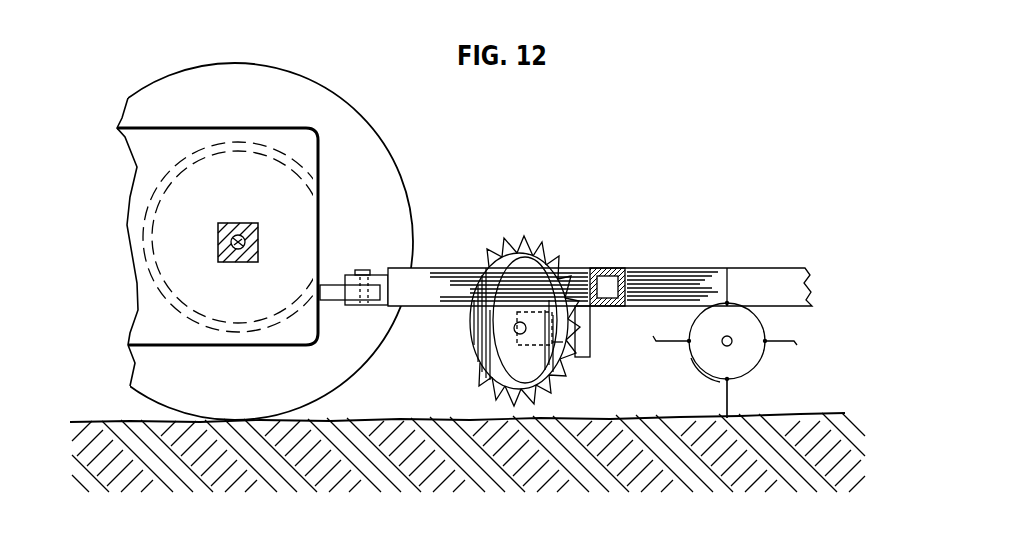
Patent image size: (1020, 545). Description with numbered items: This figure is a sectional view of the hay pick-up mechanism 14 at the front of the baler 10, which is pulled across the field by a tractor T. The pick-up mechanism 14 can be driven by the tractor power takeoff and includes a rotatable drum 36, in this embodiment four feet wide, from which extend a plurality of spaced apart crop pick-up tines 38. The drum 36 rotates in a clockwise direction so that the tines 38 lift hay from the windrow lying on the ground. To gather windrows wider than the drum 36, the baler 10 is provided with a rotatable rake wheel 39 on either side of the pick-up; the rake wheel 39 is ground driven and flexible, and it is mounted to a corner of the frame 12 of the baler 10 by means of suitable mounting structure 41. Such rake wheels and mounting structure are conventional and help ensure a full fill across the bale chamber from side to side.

The tractor T is at (402, 131).
The baler 10 is at (770, 242).
The frame 12 is at (608, 268).
The hay pick-up mechanism 14 is at (780, 320).
The rotatable drum 36 is at (745, 365).
The crop pick-up tines 38 is at (656, 343).
The rake wheel 39 is at (537, 248).
The mounting structure 41 is at (590, 332).